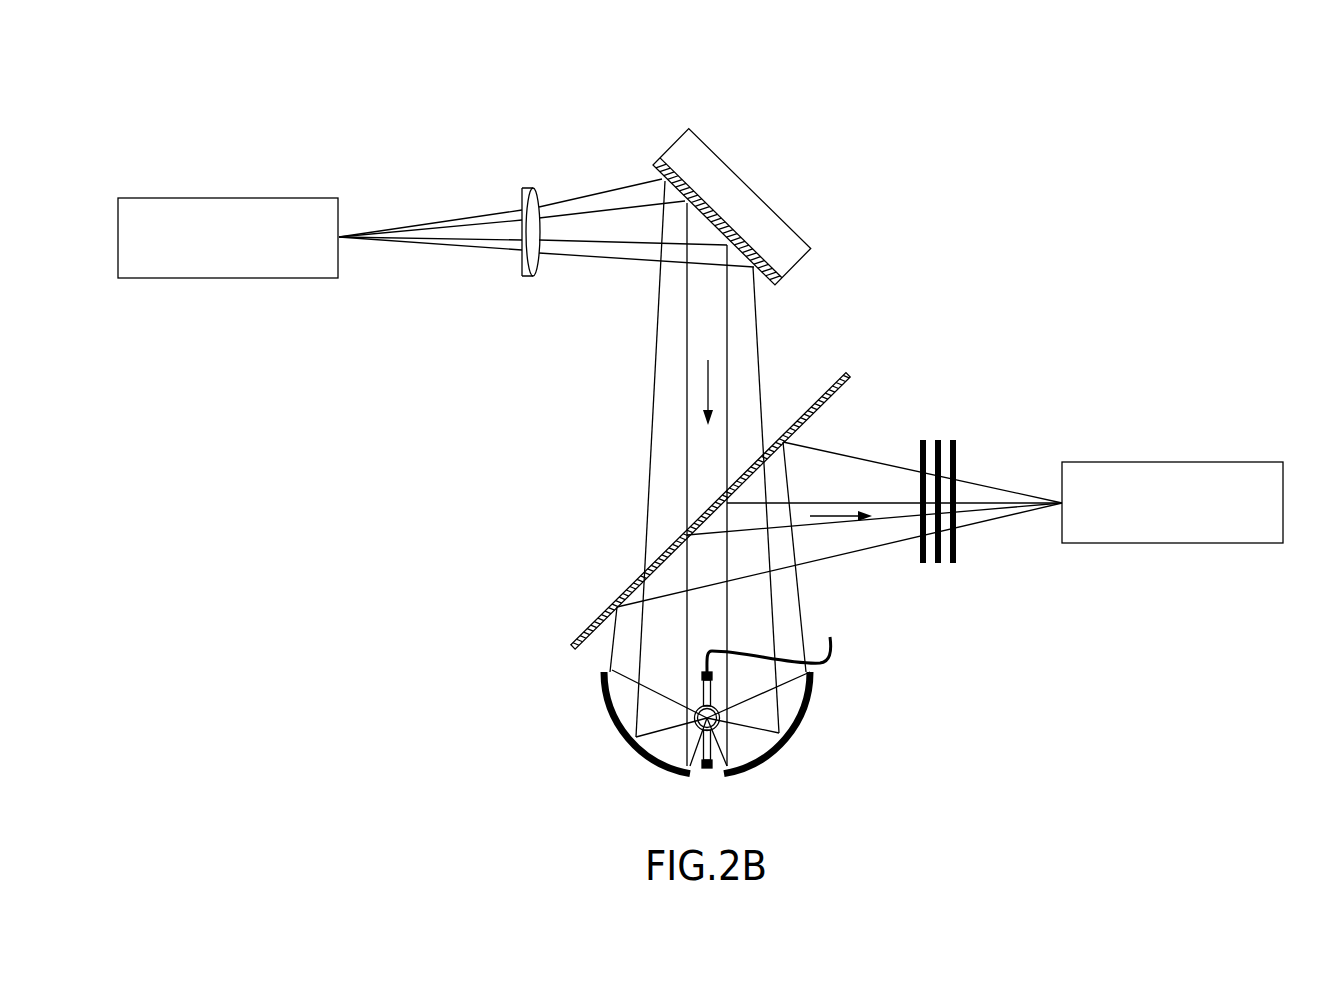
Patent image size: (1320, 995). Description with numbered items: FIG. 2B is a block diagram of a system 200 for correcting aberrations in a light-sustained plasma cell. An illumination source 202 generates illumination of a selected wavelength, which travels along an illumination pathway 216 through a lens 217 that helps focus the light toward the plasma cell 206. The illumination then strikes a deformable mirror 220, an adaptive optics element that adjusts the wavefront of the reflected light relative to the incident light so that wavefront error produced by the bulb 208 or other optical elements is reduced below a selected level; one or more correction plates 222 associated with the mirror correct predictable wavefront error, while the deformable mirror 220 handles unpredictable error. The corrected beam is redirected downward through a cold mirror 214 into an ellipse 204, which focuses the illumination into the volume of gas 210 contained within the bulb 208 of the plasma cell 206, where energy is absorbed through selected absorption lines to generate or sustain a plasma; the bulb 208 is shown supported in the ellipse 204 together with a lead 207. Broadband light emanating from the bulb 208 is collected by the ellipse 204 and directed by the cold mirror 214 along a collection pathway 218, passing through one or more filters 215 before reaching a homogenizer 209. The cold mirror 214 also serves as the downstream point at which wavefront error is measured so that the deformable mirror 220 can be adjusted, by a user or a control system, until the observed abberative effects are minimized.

The system 200 is at (203, 118).
The illumination source 202 is at (228, 278).
The ellipse 204 is at (787, 737).
The plasma cell 206 is at (690, 700).
The lamp wire 207 is at (780, 643).
The bulb 208 is at (694, 717).
The homogenizer 209 is at (1230, 462).
The volume of gas 210 is at (716, 711).
The cold mirror 214 is at (848, 375).
The filters 215 is at (962, 437).
The illumination pathway 216 is at (670, 381).
The lens 217 is at (529, 278).
The collection pathway 218 is at (847, 540).
The deformable mirror 220 is at (748, 244).
The correction plate 222 is at (773, 288).